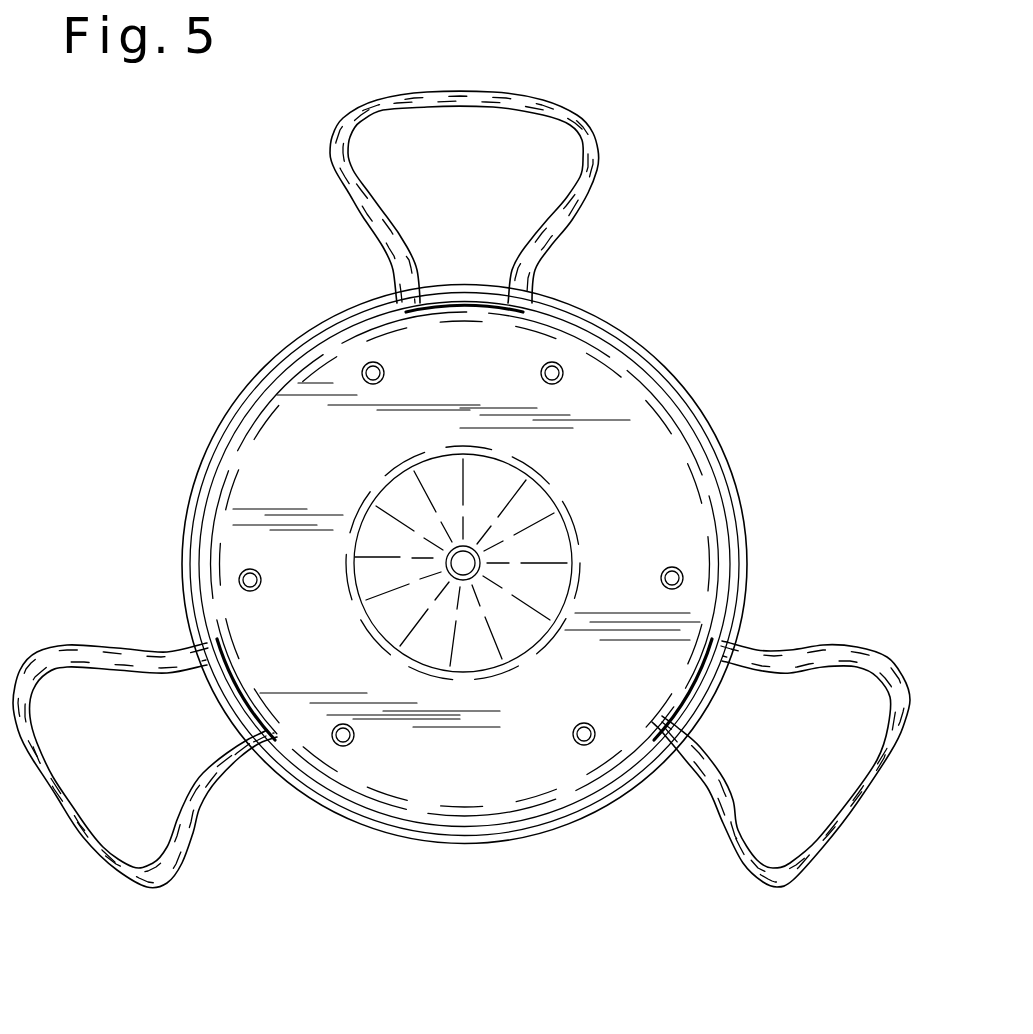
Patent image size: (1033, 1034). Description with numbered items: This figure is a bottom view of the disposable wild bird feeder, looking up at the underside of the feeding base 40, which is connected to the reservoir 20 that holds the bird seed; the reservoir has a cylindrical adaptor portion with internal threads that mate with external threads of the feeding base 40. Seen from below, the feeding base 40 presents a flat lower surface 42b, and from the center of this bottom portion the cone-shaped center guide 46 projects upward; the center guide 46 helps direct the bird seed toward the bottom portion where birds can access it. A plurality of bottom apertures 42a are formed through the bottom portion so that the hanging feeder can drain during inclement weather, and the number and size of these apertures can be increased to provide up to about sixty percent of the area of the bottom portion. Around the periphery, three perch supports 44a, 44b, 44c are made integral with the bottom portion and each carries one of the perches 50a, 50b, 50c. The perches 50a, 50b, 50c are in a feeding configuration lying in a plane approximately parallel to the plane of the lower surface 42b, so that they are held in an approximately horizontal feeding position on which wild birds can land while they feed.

The reservoir 20 is at (676, 389).
The feeding base 40 is at (720, 487).
The bottom apertures 42a is at (560, 366).
The lower surface 42b is at (624, 696).
The perch support 44a is at (457, 296).
The perch support 44b is at (712, 696).
The perch support 44c is at (225, 699).
The center guide 46 is at (377, 580).
The perch 50a is at (592, 172).
The perch 50b is at (818, 658).
The perch 50c is at (187, 845).